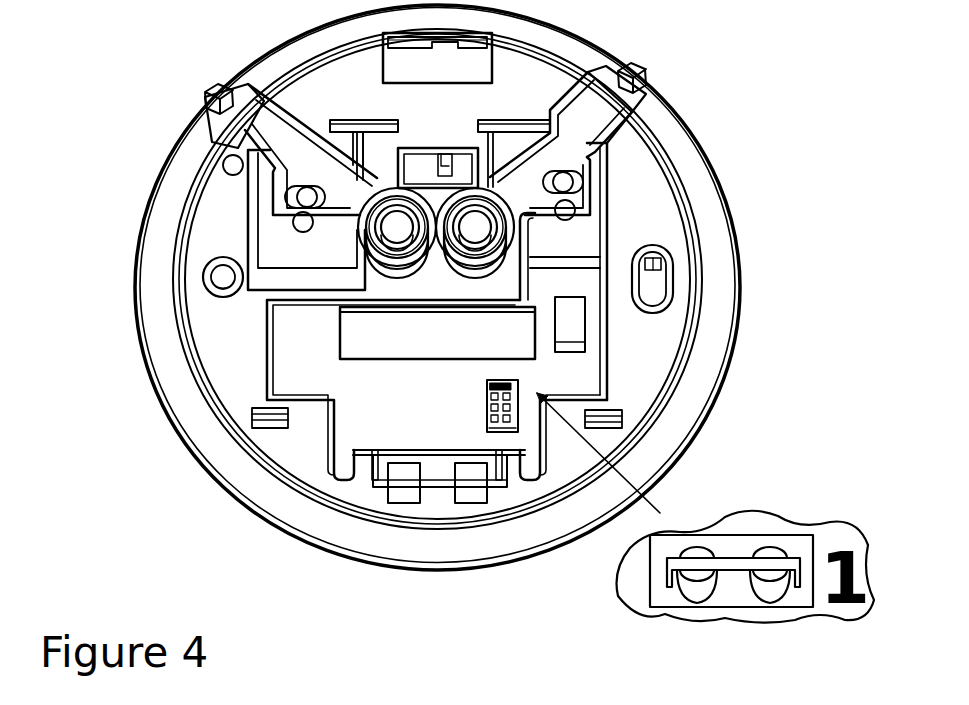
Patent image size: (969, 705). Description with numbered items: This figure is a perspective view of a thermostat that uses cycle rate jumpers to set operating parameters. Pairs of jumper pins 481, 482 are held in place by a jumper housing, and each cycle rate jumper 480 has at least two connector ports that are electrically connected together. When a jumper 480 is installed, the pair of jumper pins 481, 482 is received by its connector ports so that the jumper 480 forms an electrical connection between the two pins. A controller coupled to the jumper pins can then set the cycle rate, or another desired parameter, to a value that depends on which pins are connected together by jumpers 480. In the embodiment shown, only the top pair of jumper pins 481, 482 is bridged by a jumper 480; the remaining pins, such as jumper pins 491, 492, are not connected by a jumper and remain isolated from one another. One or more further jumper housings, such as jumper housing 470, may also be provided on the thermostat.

The jumper housing 470 is at (587, 335).
The jumper pin 491 is at (486, 413).
The jumper pin 492 is at (493, 426).
The cycle rate jumper 480 is at (733, 557).
The jumper pin 481 is at (770, 598).
The jumper pin 482 is at (697, 600).